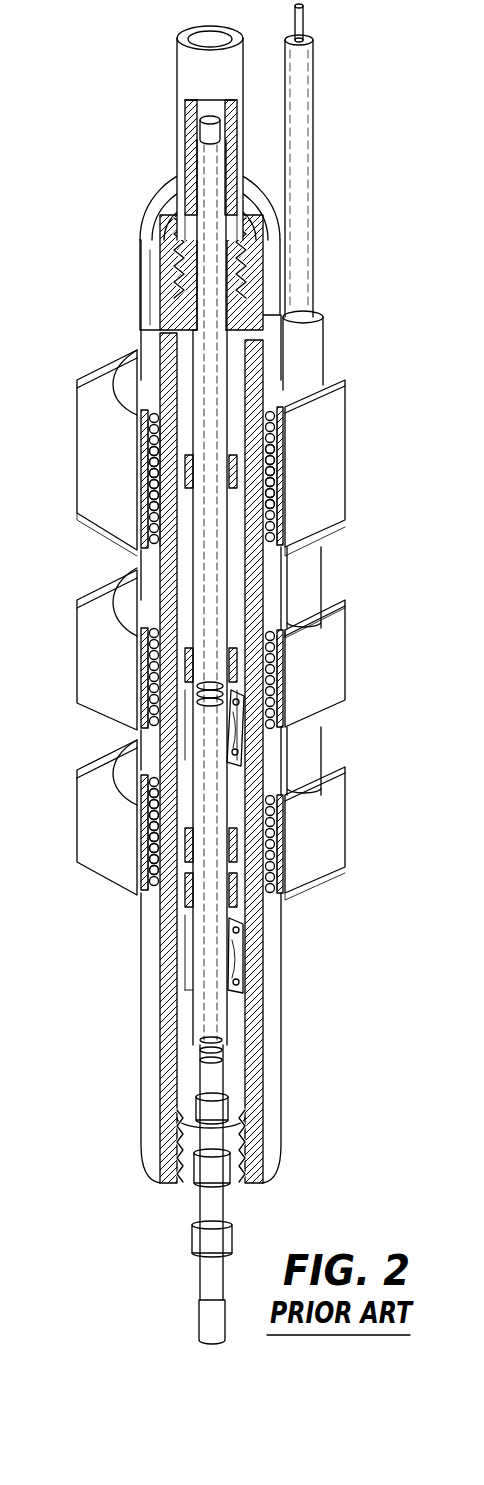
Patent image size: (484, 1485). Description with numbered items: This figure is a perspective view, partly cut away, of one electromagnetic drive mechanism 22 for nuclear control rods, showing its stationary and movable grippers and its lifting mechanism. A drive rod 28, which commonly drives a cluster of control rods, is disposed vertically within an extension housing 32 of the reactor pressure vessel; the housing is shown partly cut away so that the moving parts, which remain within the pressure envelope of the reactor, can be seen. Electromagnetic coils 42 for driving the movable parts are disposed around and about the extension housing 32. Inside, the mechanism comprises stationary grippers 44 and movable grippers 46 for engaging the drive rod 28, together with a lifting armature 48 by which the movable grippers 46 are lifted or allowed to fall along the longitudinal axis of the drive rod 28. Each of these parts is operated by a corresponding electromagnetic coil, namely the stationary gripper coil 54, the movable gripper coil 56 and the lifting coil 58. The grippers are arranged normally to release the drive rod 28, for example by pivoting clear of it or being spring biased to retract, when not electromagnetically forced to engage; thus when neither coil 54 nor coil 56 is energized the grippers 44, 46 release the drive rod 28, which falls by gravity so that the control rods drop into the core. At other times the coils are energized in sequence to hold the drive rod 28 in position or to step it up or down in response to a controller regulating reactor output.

The electromagnetic drive mechanism 22 is at (365, 381).
The drive rod 28 is at (205, 367).
The extension housing 32 is at (148, 268).
The electromagnetic coils 42 is at (285, 455).
The stationary grippers 44 is at (232, 953).
The movable grippers 46 is at (223, 736).
The lifting armature 48 is at (285, 510).
The stationary gripper coil 54 is at (285, 862).
The movable gripper coil 56 is at (345, 612).
The lifting coil 58 is at (148, 508).